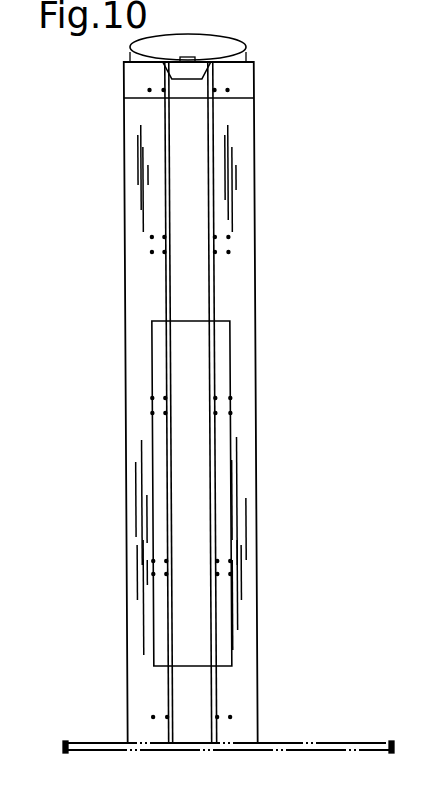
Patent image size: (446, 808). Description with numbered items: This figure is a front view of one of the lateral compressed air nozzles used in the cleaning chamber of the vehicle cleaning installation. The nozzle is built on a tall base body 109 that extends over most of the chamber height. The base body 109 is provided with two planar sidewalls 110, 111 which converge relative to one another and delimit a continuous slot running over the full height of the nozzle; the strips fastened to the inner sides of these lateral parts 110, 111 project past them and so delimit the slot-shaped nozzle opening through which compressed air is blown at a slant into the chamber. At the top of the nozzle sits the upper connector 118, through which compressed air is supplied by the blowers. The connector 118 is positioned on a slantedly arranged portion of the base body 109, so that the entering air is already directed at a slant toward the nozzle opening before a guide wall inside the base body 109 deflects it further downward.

The base body 109 is at (236, 197).
The sidewall 110 is at (242, 266).
The sidewall 111 is at (149, 304).
The upper connector 118 is at (228, 48).